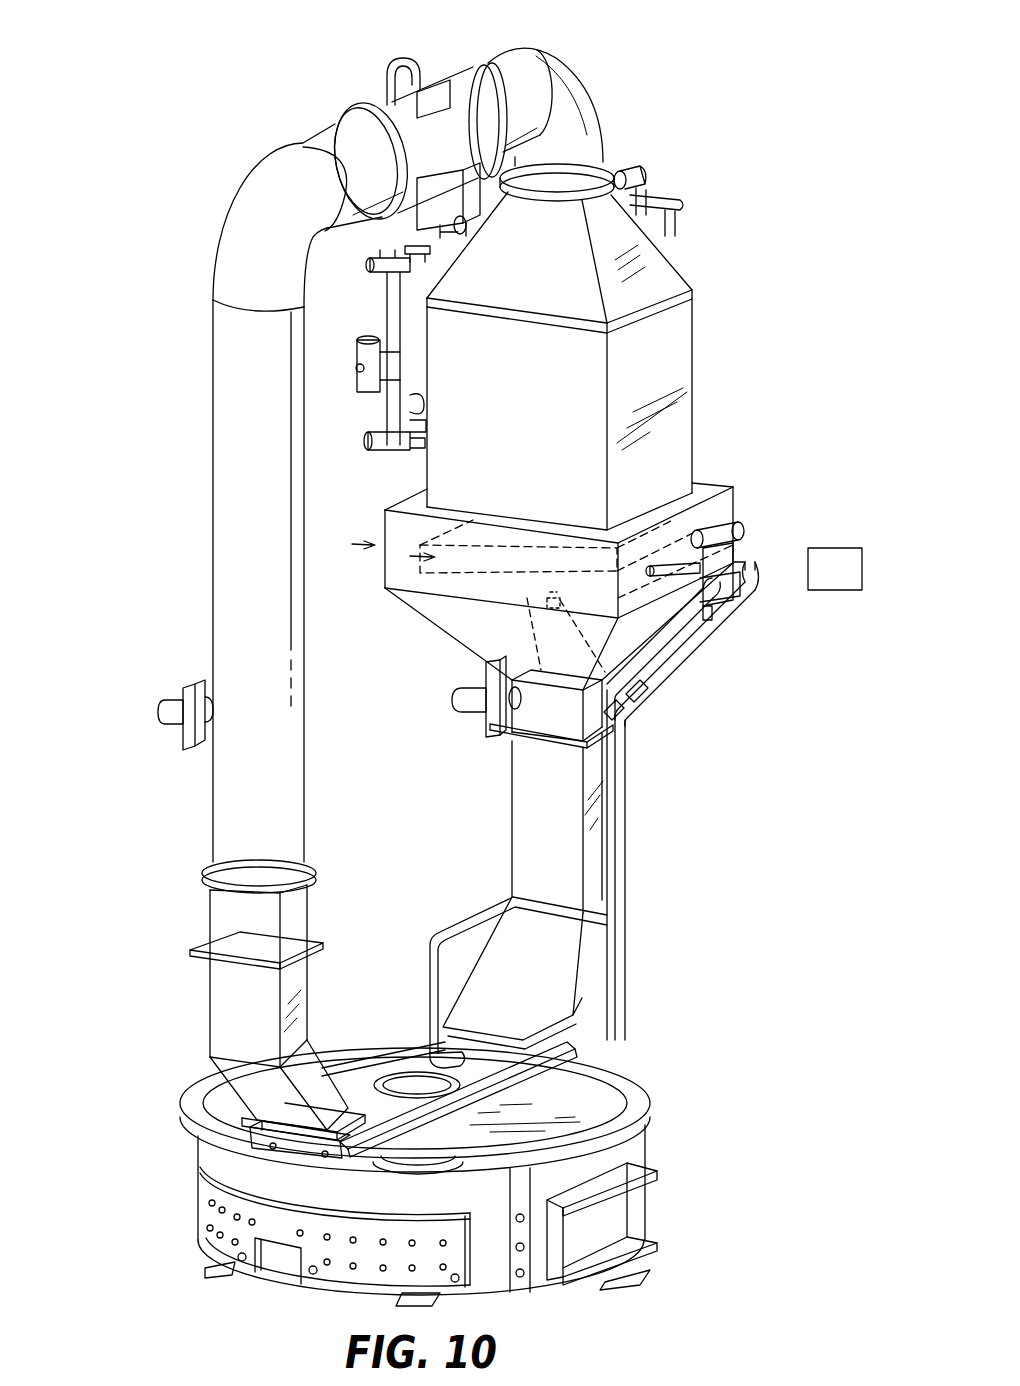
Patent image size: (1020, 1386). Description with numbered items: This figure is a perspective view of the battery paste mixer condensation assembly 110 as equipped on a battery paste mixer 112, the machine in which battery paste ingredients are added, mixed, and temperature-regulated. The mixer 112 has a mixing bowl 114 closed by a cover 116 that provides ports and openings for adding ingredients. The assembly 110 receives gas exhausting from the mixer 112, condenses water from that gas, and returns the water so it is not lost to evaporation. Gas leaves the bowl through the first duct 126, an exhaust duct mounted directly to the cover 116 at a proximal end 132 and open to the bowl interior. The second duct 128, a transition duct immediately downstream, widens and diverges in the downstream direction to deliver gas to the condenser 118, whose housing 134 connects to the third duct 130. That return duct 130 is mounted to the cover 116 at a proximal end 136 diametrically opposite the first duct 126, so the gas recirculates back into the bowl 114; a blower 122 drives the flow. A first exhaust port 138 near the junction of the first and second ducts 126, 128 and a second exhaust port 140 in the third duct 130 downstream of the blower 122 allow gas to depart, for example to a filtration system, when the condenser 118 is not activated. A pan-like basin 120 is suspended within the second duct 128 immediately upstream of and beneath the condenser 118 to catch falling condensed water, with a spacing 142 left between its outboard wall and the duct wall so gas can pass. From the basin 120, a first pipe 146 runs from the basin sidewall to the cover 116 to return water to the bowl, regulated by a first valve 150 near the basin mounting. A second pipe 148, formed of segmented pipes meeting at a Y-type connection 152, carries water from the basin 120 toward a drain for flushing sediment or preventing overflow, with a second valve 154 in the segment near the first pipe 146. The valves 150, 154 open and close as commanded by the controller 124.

The battery paste mixer condensation assembly 110 is at (732, 168).
The battery paste mixer 112 is at (654, 1148).
The mixing bowl 114 is at (208, 1218).
The cover 116 is at (598, 1112).
The condenser 118 is at (700, 343).
The basin 120 is at (475, 571).
The blower 122 is at (450, 118).
The controller 124 is at (742, 566).
The first duct 126 is at (512, 830).
The second duct 128 is at (408, 604).
The third duct 130 is at (213, 476).
The proximal end 132 is at (565, 1046).
The housing 134 is at (700, 318).
The proximal end 136 is at (250, 1134).
The first exhaust port 138 is at (470, 708).
The second exhaust port 140 is at (166, 704).
The spacing 142 is at (403, 557).
The first pipe 146 is at (733, 620).
The second pipe 148 is at (620, 826).
The first valve 150 is at (725, 545).
The Y-type connection 152 is at (626, 703).
The second valve 154 is at (686, 660).